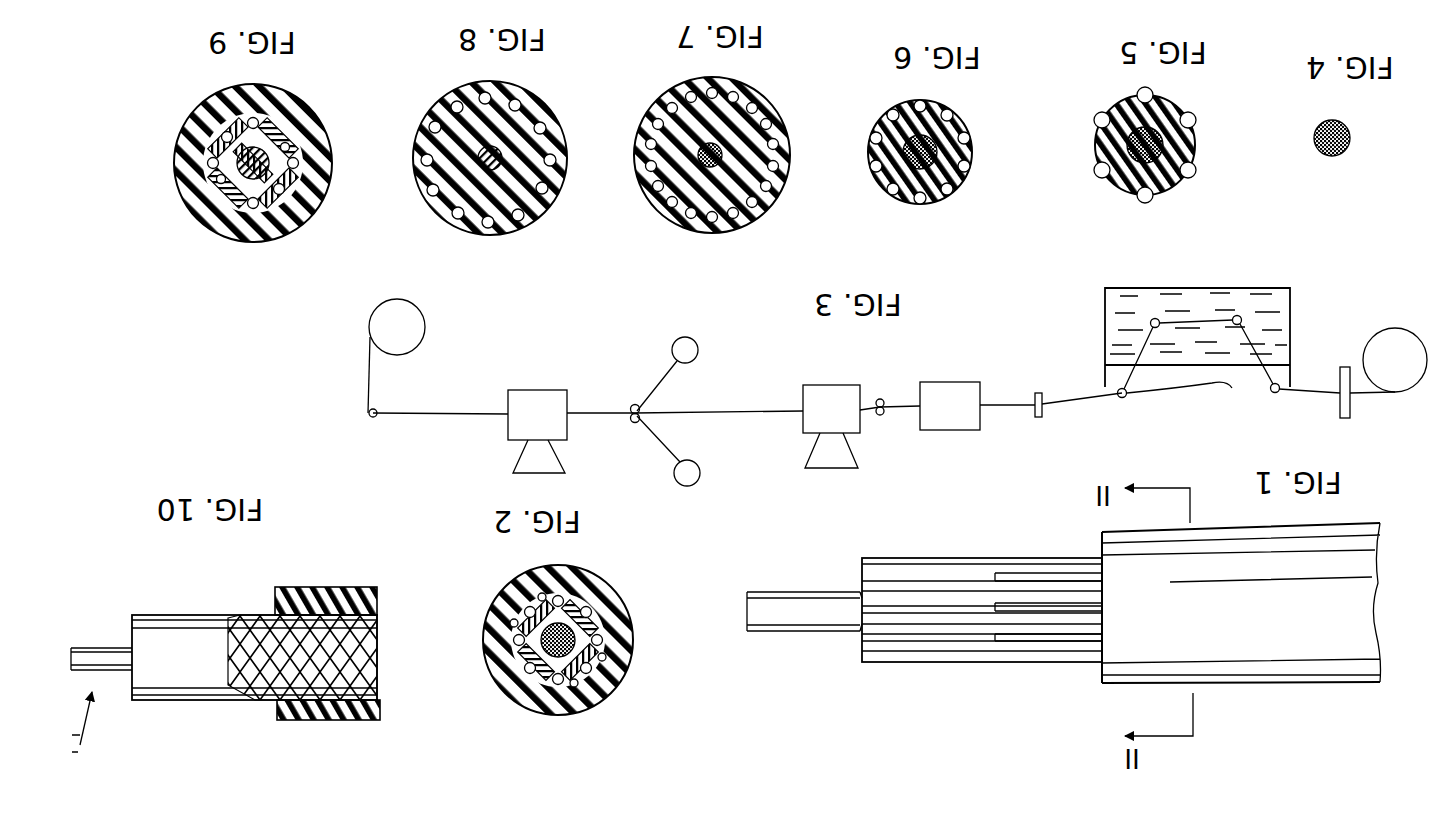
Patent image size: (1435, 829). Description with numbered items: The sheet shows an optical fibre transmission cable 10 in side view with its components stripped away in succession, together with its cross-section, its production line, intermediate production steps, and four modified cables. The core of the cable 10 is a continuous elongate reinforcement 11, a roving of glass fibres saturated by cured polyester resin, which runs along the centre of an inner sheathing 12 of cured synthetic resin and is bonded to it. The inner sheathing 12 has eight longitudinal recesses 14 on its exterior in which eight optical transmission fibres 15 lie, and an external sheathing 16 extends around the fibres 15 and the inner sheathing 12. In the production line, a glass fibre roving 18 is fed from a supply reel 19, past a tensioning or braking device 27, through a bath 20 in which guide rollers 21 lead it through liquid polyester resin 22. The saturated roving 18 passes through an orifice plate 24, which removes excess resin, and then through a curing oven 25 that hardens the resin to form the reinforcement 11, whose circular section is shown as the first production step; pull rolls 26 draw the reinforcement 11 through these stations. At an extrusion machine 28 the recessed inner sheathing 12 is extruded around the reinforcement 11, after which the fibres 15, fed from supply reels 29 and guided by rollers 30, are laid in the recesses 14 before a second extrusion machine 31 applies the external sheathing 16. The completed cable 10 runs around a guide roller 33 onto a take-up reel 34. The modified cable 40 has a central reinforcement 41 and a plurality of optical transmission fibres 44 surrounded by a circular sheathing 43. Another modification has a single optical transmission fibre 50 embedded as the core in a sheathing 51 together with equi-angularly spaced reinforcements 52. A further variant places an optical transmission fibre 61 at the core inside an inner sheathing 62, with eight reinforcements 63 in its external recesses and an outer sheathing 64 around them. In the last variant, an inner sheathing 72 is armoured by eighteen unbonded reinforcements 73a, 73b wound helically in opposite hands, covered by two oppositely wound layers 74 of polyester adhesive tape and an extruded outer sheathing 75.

In FIG. 1, the optical fibre transmission cable 10 is at (960, 663).
In FIG. 3, the optical fibre transmission cable 10 is at (379, 433).
In FIG. 1, the reinforcement 11 is at (798, 615).
In FIG. 3, the reinforcement 11 is at (902, 402).
In FIG. 2, the reinforcement 11 is at (590, 660).
In FIG. 6, the reinforcement 11 is at (920, 152).
In FIG. 5, the reinforcement 11 is at (1128, 147).
In FIG. 4, the reinforcement 11 is at (1320, 148).
In FIG. 1, the inner sheathing 12 is at (882, 630).
In FIG. 2, the inner sheathing 12 is at (495, 638).
In FIG. 6, the inner sheathing 12 is at (878, 158).
In FIG. 5, the inner sheathing 12 is at (1113, 178).
In FIG. 1, the longitudinal recesses 14 is at (958, 580).
In FIG. 2, the longitudinal recesses 14 is at (603, 597).
In FIG. 5, the longitudinal recesses 14 is at (1185, 172).
In FIG. 1, the optical transmission fibres 15 is at (1042, 626).
In FIG. 2, the optical transmission fibres 15 is at (530, 662).
In FIG. 6, the optical transmission fibres 15 is at (893, 188).
In FIG. 1, the external sheathing 16 is at (1241, 603).
In FIG. 2, the external sheathing 16 is at (508, 698).
In FIG. 3, the glass fibre roving 18 is at (1282, 392).
In FIG. 3, the supply reel 19 is at (1388, 360).
In FIG. 3, the bath 20 is at (1102, 319).
In FIG. 3, the guide rollers 21 is at (1195, 388).
In FIG. 3, the liquid polyester resin 22 is at (1112, 352).
In FIG. 3, the orifice plate 24 is at (1034, 393).
In FIG. 3, the curing oven 25 is at (950, 406).
In FIG. 3, the pull rolls 26 is at (882, 415).
In FIG. 3, the tensioning or braking device 27 is at (1343, 367).
In FIG. 3, the extrusion machine 28 is at (810, 392).
In FIG. 3, the supply reels 29 is at (674, 475).
In FIG. 3, the rollers 30 is at (632, 419).
In FIG. 3, the second extrusion machine 31 is at (537, 431).
In FIG. 3, the guide roller 33 is at (367, 416).
In FIG. 3, the take-up reel 34 is at (396, 356).
In FIG. 7, the modified cable 40 is at (627, 188).
In FIG. 7, the reinforcement 41 is at (698, 150).
In FIG. 7, the sheathing 43 is at (747, 200).
In FIG. 7, the optical transmission fibres 44 is at (668, 213).
In FIG. 8, the optical transmission fibre 50 is at (478, 158).
In FIG. 8, the sheathing 51 is at (440, 210).
In FIG. 8, the reinforcements 52 is at (439, 182).
In FIG. 9, the optical transmission fibre 61 is at (242, 166).
In FIG. 9, the inner sheathing 62 is at (247, 222).
In FIG. 9, the reinforcements 63 is at (265, 113).
In FIG. 9, the outer sheathing 64 is at (218, 107).
In FIG. 10, the inner sheathing 72 is at (254, 657).
In FIG. 10, the reinforcements 73a is at (245, 688).
In FIG. 10, the reinforcements 73b is at (230, 617).
In FIG. 10, the layers of polyester adhesive tape 74 is at (265, 694).
In FIG. 10, the extruded outer sheathing 75 is at (312, 722).